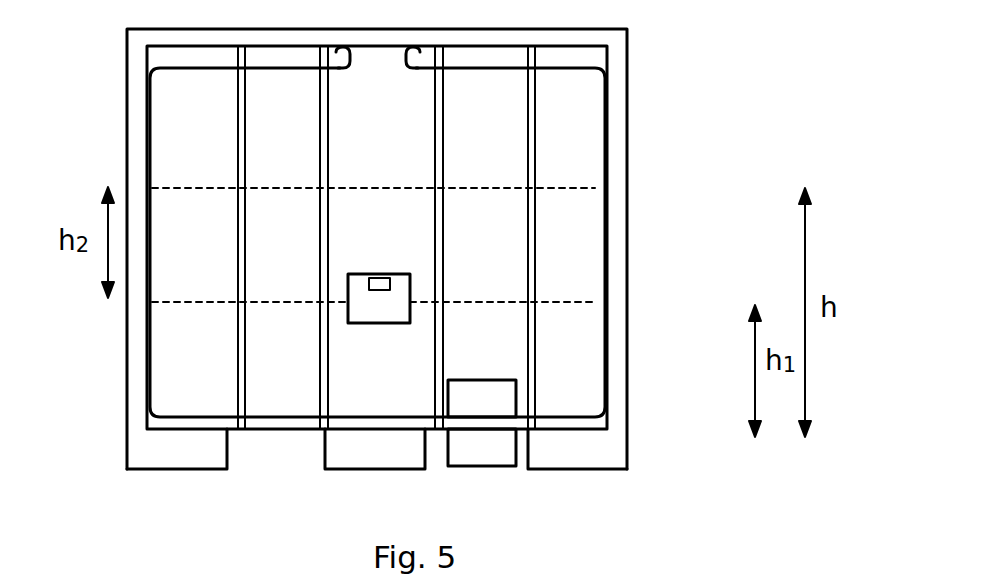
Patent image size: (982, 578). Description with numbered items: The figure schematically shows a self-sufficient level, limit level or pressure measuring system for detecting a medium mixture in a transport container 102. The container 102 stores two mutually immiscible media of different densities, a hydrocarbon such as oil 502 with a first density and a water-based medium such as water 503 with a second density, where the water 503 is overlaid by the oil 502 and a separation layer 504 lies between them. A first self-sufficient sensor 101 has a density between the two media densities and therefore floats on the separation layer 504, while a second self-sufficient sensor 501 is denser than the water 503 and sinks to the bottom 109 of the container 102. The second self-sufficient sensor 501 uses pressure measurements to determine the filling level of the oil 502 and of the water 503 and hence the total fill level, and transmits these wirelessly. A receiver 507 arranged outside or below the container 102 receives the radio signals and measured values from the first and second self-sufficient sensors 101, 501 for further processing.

The container 102 is at (627, 83).
The bottom of the container 109 is at (278, 417).
The oil 502 is at (583, 222).
The water 503 is at (583, 352).
The separation layer 504 is at (185, 307).
The first self-sufficient sensor 101 is at (410, 292).
The second self-sufficient sensor 501 is at (517, 403).
The receiver 507 is at (474, 466).